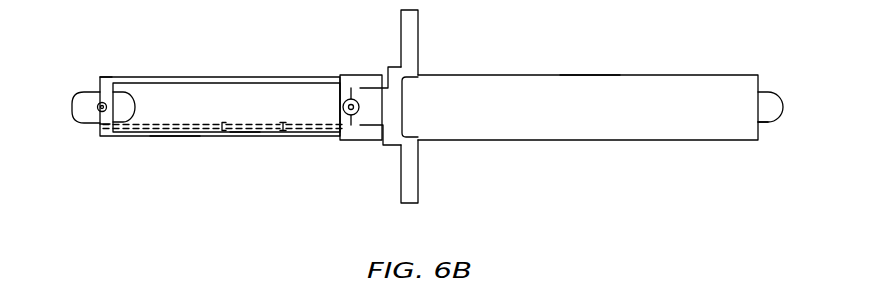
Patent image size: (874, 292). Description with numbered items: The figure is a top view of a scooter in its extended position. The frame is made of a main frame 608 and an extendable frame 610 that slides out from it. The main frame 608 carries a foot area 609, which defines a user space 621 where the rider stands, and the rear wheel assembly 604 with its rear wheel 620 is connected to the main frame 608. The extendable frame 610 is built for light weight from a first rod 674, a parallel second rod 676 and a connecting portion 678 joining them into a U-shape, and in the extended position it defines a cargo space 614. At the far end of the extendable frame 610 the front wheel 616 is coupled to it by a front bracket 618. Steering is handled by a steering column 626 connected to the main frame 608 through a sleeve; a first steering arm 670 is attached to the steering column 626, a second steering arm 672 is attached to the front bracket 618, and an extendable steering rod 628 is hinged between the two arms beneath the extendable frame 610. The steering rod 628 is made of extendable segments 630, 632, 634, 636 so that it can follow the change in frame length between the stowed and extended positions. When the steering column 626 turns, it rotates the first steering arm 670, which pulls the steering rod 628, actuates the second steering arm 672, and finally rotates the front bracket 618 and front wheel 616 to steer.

The rear wheel assembly 604 is at (769, 124).
The main frame 608 is at (678, 73).
The foot area 609 is at (573, 88).
The extendable frame 610 is at (220, 79).
The cargo space 614 is at (219, 115).
The front wheel 616 is at (85, 118).
The front bracket 618 is at (97, 105).
The rear wheel 620 is at (778, 104).
The user space 621 is at (676, 118).
The steering column 626 is at (353, 88).
The extendable steering rod 628 is at (244, 134).
The extendable segment 630 is at (326, 129).
The extendable segment 632 is at (271, 129).
The extendable segment 634 is at (197, 129).
The extendable segment 636 is at (131, 123).
The first steering arm 670 is at (356, 127).
The second steering arm 672 is at (101, 127).
The first rod 674 is at (172, 77).
The second rod 676 is at (170, 137).
The connecting portion 678 is at (100, 79).